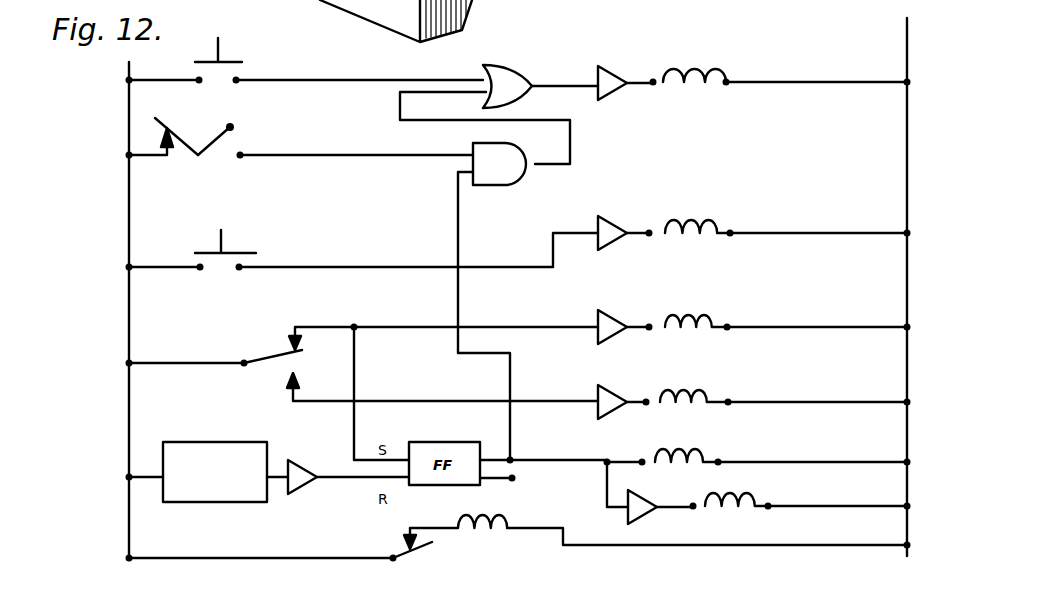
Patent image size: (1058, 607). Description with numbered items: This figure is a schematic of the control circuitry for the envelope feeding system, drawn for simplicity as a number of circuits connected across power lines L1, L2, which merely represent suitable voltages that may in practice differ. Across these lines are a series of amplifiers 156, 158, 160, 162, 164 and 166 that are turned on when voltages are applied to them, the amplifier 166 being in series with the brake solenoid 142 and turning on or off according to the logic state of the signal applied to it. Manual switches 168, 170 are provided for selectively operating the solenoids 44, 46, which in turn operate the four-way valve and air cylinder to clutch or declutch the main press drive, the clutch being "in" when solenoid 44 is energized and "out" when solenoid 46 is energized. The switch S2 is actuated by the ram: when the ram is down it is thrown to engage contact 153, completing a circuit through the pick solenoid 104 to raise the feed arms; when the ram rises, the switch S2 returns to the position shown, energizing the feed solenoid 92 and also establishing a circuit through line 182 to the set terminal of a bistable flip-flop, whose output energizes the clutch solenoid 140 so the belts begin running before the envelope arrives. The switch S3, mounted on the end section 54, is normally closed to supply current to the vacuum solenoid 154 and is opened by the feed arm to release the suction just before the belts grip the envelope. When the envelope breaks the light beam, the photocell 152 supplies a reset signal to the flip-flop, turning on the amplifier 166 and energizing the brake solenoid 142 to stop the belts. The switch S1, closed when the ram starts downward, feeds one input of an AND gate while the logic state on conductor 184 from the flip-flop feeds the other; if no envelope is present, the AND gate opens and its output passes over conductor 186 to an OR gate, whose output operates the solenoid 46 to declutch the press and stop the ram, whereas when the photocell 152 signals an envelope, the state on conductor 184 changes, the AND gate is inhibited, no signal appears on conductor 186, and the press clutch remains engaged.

The power line L1 is at (129, 107).
The power line L2 is at (908, 175).
The manual switch 170 is at (222, 77).
The end section 54 is at (196, 128).
The switch S1 is at (214, 143).
The conductor 186 is at (460, 122).
The conductor 184 is at (458, 227).
The amplifier 156 is at (628, 42).
The solenoid 46 is at (705, 22).
The manual switch 168 is at (199, 250).
The amplifier 158 is at (628, 196).
The solenoid 44 is at (710, 222).
The switch S2 is at (258, 356).
The amplifier 160 is at (628, 288).
The feed solenoid 92 is at (718, 325).
The contact 153 is at (290, 380).
The amplifier 162 is at (604, 396).
The pick solenoid 104 is at (660, 390).
The line 182 is at (356, 362).
The photocell 152 is at (204, 410).
The amplifier 164 is at (316, 444).
The switch S3 is at (396, 556).
The vacuum solenoid 154 is at (508, 522).
The clutch solenoid 140 is at (642, 456).
The amplifier 166 is at (640, 510).
The brake solenoid 142 is at (744, 504).